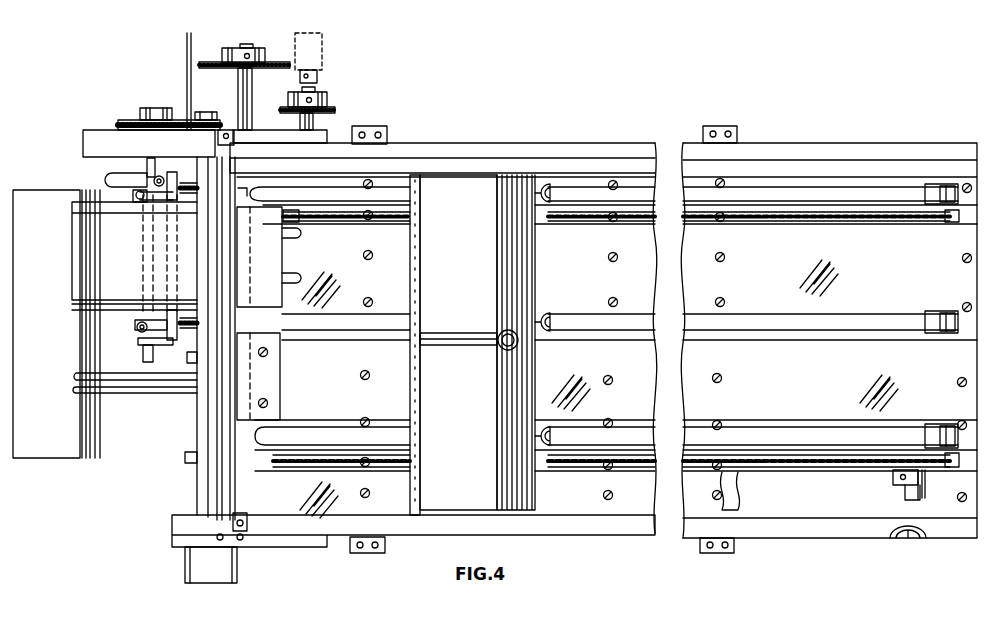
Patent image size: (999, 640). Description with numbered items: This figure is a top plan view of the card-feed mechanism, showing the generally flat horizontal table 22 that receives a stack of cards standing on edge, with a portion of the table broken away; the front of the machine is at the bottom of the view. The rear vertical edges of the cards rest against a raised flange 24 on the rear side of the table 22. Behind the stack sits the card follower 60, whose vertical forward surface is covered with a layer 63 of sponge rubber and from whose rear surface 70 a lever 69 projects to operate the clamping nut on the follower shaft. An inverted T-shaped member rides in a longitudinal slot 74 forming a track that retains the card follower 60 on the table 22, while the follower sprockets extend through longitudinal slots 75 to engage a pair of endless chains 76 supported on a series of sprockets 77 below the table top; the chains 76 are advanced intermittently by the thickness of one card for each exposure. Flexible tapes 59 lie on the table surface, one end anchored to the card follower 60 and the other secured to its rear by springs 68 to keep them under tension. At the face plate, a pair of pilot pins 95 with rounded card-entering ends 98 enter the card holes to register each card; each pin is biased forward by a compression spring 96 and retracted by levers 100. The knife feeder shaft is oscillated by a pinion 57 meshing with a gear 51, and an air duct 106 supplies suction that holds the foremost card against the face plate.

The table 22 is at (782, 283).
The raised flange 24 is at (423, 147).
The gear 51 is at (145, 108).
The pinion 57 is at (219, 100).
The flexible tapes 59 is at (382, 199).
The card follower 60 is at (541, 280).
The sponge rubber layer 63 is at (411, 258).
The springs 68 is at (532, 212).
The lever 69 is at (481, 342).
The rear surface of card follower housing 70 is at (507, 253).
The longitudinal slot 74 is at (771, 342).
The longitudinal slots 75 is at (307, 223).
The endless chains 76 is at (339, 222).
The sprockets 77 is at (930, 485).
The pilot pins 95 is at (152, 177).
The compression spring 96 is at (195, 185).
The card-entering ends of pilot pins 98 is at (240, 198).
The levers 100 is at (136, 195).
The air duct 106 is at (95, 458).